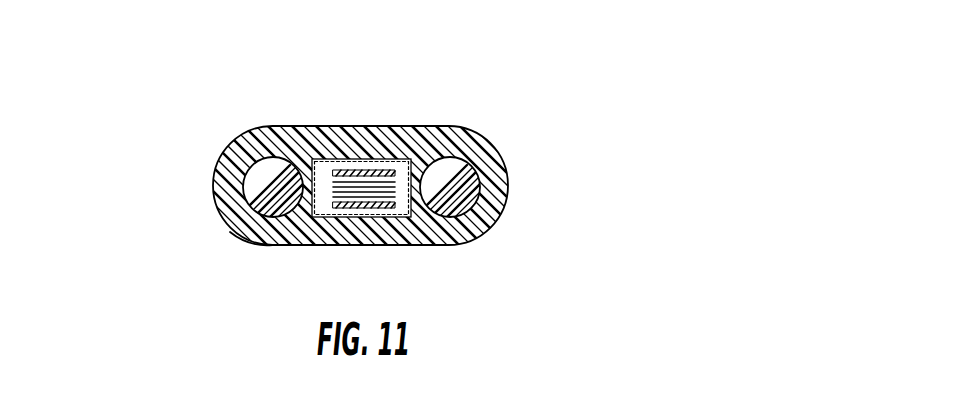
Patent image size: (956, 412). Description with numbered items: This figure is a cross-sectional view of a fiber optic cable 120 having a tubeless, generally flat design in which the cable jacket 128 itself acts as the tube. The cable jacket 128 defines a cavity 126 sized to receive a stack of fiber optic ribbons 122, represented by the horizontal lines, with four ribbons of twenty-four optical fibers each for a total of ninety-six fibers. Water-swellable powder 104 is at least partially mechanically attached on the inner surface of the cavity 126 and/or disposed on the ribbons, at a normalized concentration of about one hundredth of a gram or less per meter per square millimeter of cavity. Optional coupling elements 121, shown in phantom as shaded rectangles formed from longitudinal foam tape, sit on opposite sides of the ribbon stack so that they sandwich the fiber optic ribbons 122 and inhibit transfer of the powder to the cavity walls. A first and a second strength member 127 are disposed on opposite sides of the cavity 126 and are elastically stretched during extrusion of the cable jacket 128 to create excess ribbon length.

The fiber optic cable 120 is at (143, 140).
The coupling element 121 is at (332, 171).
The fiber optic ribbons 122 is at (362, 182).
The cavity 126 is at (322, 164).
The strength member 127 is at (255, 203).
The cable jacket 128 is at (258, 234).
The water-swellable powder 104 is at (360, 216).